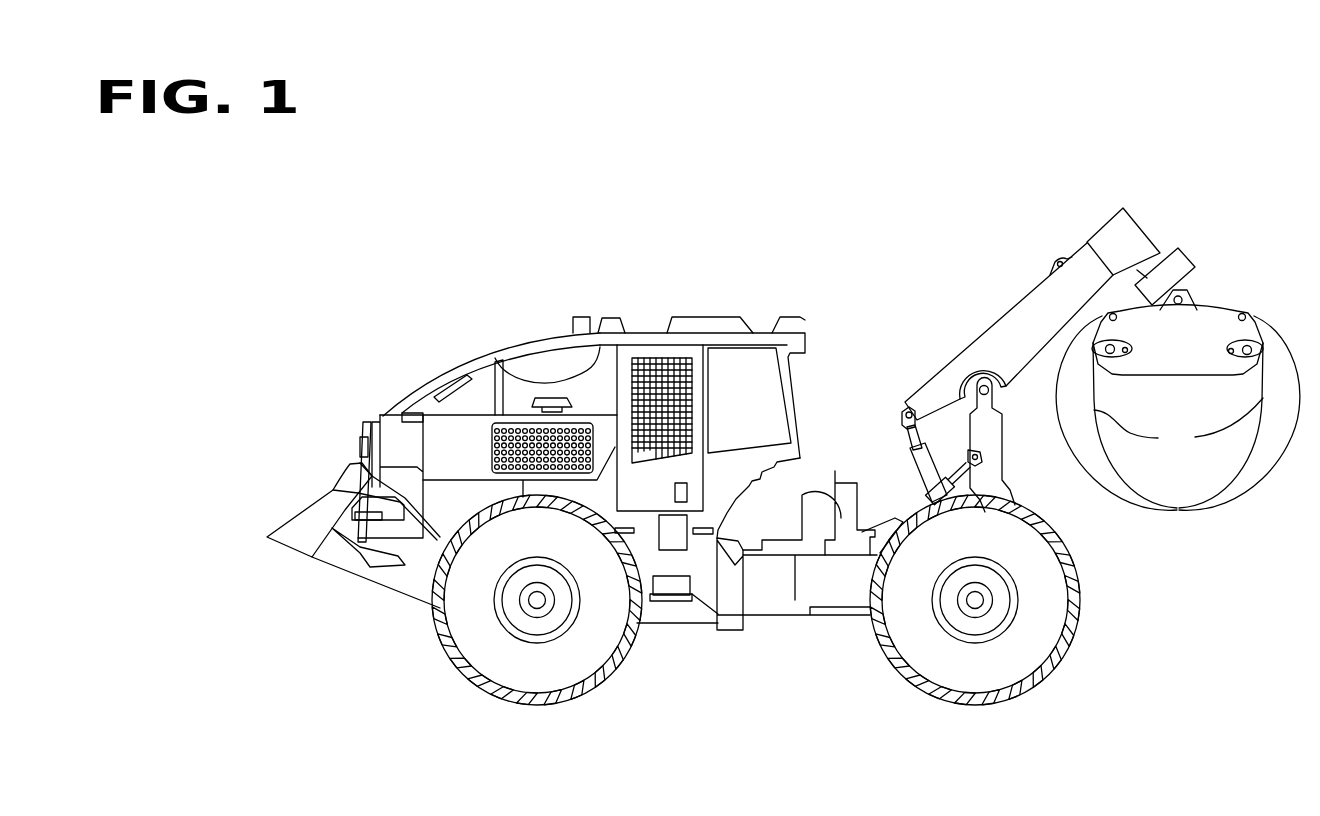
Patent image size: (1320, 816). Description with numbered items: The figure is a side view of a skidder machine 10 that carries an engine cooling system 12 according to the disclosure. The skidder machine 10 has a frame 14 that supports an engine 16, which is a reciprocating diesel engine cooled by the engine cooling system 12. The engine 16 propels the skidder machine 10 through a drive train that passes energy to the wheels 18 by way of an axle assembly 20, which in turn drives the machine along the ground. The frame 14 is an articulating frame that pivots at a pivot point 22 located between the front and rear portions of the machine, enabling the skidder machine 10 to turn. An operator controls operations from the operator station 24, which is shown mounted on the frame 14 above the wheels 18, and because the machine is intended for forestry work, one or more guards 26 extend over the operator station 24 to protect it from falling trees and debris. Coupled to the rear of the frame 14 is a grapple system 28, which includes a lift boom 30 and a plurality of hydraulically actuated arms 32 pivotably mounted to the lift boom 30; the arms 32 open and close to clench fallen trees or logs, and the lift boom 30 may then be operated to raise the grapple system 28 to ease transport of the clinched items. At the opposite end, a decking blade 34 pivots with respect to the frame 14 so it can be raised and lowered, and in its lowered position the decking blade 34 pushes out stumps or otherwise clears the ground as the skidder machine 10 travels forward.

The skidder machine 10 is at (766, 280).
The engine cooling system 12 is at (541, 386).
The frame 14 is at (668, 613).
The engine 16 is at (427, 405).
The wheels 18 is at (458, 650).
The axle assembly 20 is at (532, 600).
The pivot point 22 is at (737, 625).
The operator station 24 is at (733, 385).
The guards 26 is at (503, 347).
The grapple system 28 is at (1050, 242).
The lift boom 30 is at (982, 334).
The hydraulically actuated arms 32 is at (1178, 400).
The decking blade 34 is at (299, 516).